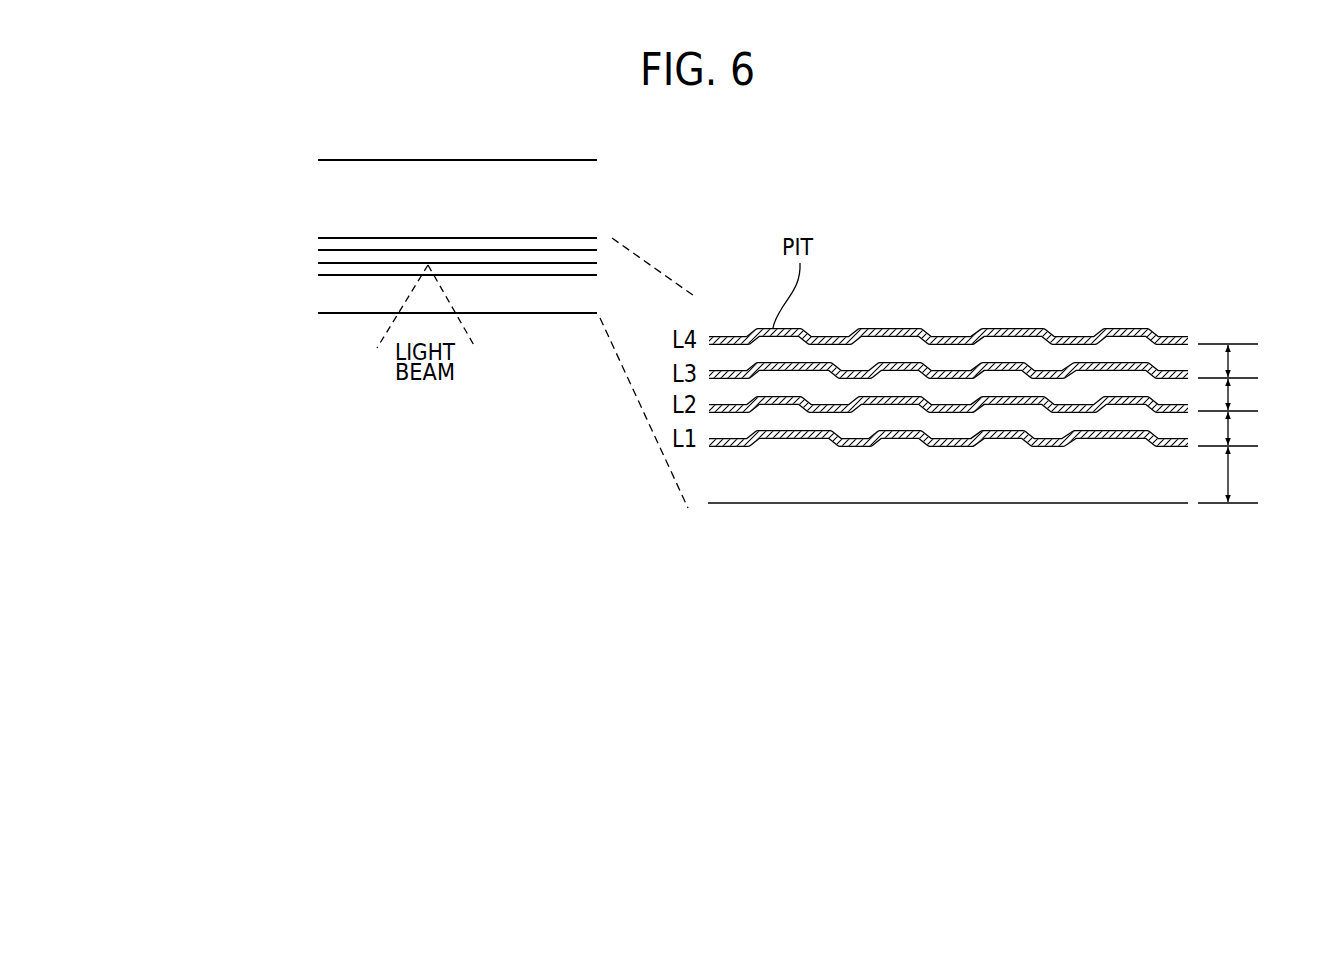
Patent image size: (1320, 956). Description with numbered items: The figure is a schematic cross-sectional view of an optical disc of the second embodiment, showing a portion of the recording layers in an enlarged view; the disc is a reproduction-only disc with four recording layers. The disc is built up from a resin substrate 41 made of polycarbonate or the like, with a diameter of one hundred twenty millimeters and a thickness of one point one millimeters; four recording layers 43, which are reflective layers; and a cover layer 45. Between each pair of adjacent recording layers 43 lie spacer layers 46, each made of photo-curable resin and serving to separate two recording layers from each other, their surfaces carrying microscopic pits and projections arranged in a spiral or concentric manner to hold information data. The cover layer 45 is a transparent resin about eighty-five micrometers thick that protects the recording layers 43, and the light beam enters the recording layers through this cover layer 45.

The resin substrate 41 is at (320, 206).
The recording layers 43 is at (307, 232).
The cover layer 45 is at (320, 296).
The spacer layers 46 is at (1125, 415).